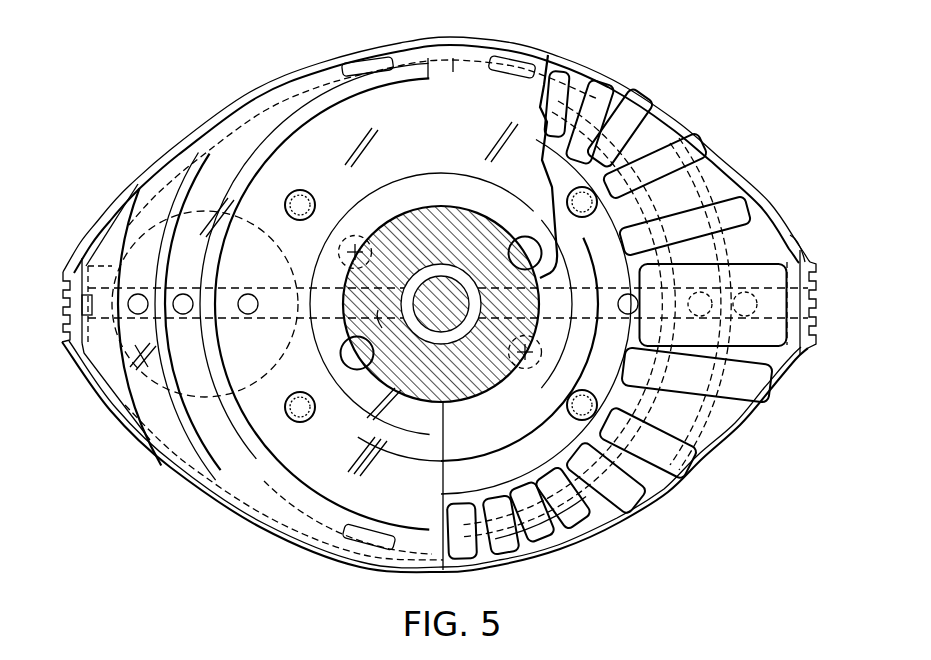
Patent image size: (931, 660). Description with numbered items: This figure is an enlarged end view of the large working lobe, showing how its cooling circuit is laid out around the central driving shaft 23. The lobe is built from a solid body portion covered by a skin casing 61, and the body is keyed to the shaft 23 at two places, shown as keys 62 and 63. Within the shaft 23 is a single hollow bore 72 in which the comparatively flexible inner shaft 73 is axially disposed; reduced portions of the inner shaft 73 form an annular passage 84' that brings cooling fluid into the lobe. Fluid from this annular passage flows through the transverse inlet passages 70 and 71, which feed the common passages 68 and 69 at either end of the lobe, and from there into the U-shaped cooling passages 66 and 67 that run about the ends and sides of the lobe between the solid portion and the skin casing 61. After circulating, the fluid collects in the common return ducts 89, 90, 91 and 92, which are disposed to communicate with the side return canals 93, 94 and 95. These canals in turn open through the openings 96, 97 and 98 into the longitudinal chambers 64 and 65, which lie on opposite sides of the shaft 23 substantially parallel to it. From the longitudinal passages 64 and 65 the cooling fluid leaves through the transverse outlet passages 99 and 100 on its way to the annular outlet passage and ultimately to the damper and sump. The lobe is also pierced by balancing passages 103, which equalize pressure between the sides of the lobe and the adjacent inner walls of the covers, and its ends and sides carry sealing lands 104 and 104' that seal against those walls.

The shaft 23 is at (462, 392).
The skin casing 61 is at (460, 446).
The key 62 is at (341, 354).
The key 63 is at (525, 237).
The longitudinal chamber 64 is at (557, 343).
The longitudinal chamber 65 is at (248, 378).
The U-shaped cooling passage 66 is at (646, 504).
The U-shaped cooling passage 67 is at (244, 505).
The common passage 68 is at (796, 352).
The common passage 69 is at (83, 262).
The transverse inlet passage 70 is at (594, 276).
The transverse inlet passage 71 is at (282, 274).
The hollow bore 72 is at (470, 282).
The inner shaft 73 is at (412, 284).
The annular passage 84' is at (441, 304).
The common return duct 89 is at (368, 60).
The common return duct 90 is at (516, 64).
The common return duct 91 is at (522, 556).
The common return duct 92 is at (370, 548).
The side return canal 93 is at (156, 438).
The side return canal 94 is at (228, 490).
The side return canal 95 is at (317, 540).
The opening 96 is at (138, 294).
The opening 97 is at (184, 294).
The opening 98 is at (248, 294).
The transverse outlet passage 99 is at (384, 330).
The transverse outlet passage 100 is at (441, 304).
The balancing passage 103 is at (300, 190).
The sealing land 104 is at (795, 229).
The sealing land 104' is at (733, 376).